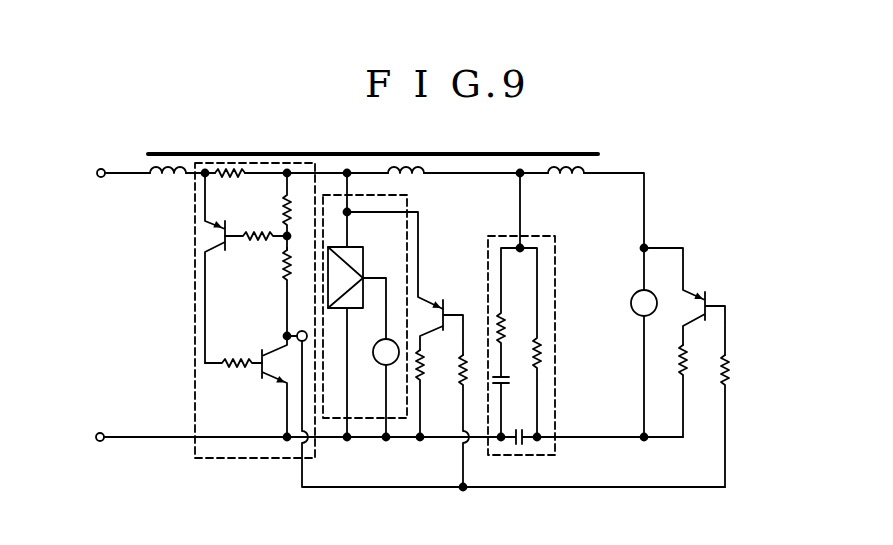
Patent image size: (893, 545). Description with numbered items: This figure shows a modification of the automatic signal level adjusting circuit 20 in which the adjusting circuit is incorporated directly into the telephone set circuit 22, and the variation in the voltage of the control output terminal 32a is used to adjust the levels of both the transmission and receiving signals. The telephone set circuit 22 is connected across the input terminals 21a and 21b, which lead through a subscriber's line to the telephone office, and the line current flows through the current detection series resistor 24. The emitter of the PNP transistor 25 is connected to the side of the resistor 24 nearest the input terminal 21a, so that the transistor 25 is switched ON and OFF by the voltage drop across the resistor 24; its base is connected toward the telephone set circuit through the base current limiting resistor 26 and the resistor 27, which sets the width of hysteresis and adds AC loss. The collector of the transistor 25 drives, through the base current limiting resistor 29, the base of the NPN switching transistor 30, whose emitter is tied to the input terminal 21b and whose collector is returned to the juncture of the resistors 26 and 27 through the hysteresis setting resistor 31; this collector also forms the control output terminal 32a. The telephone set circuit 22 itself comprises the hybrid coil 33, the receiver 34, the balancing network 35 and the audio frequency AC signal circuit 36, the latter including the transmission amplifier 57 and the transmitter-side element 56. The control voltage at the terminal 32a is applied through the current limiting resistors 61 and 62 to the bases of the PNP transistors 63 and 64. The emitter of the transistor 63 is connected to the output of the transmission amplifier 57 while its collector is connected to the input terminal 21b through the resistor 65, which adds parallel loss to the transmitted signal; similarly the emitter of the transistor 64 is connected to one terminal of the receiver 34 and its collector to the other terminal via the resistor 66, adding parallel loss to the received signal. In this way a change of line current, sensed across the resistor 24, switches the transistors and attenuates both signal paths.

The telephone set circuit 22 is at (619, 142).
The hybrid coil 33 is at (503, 153).
The input terminal 21a is at (104, 159).
The input terminal 21b is at (385, 425).
The automatic signal level adjusting circuit 20 is at (246, 460).
The current detection series resistor 24 is at (230, 190).
The PNP transistor 25 is at (212, 232).
The base current limiting resistor 26 is at (258, 251).
The resistor for setting width of hysteresis and adding AC loss 27 is at (275, 211).
The resistor for setting width of hysteresis and adding AC loss 31 is at (299, 292).
The base current limiting resistor 29 is at (233, 349).
The NPN switching transistor 30 is at (274, 386).
The control output terminal 32a is at (297, 332).
The audio frequency AC signal circuit 36 is at (407, 197).
The transmission amplifier 57 is at (363, 258).
The timer 56 is at (373, 388).
The PNP transistor 63 is at (441, 314).
The resistor for adding parallel loss 65 is at (431, 393).
The current limiting resistor 61 is at (454, 423).
The balancing network 35 is at (555, 255).
The receiver 34 is at (633, 283).
The PNP transistor 64 is at (684, 301).
The resistor for adding parallel loss 66 is at (696, 391).
The current limiting resistor 62 is at (738, 421).